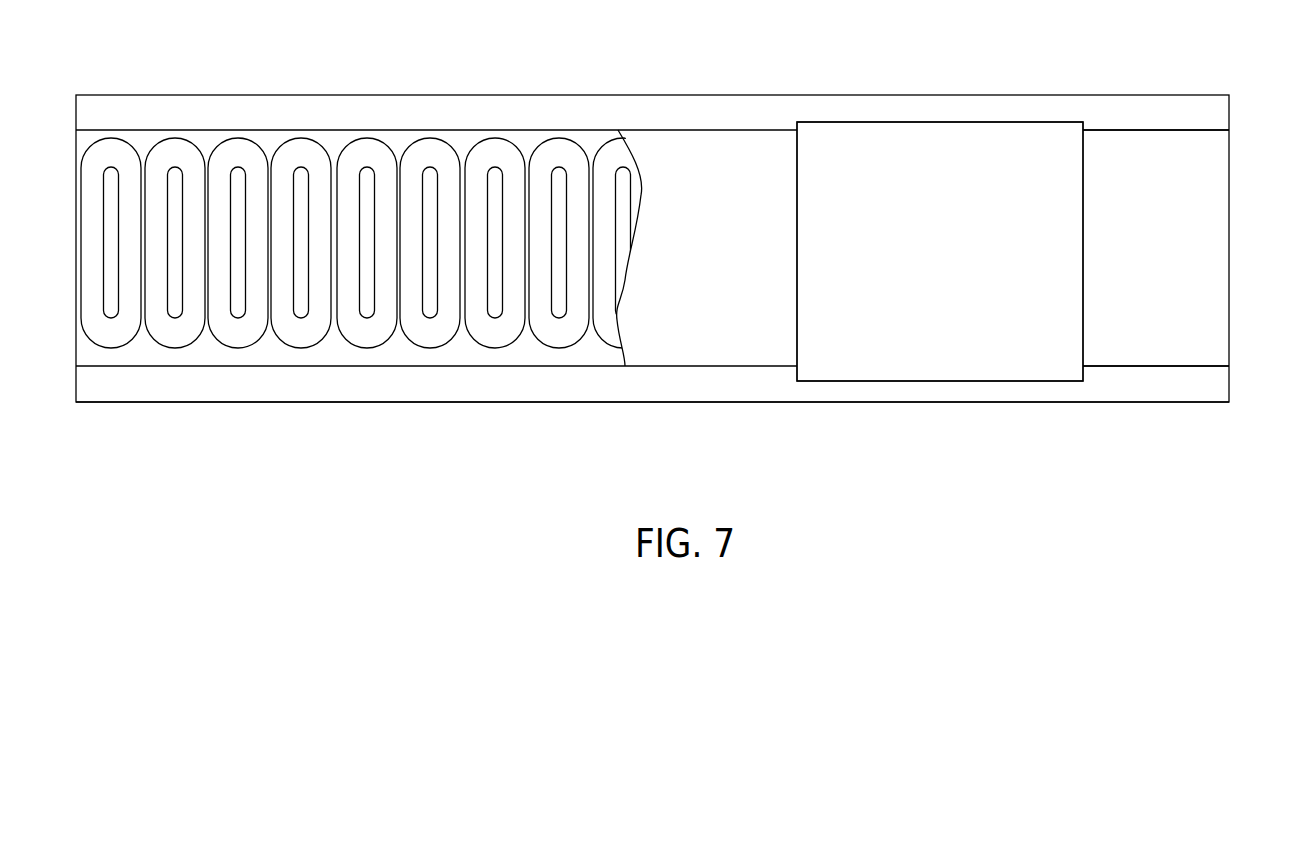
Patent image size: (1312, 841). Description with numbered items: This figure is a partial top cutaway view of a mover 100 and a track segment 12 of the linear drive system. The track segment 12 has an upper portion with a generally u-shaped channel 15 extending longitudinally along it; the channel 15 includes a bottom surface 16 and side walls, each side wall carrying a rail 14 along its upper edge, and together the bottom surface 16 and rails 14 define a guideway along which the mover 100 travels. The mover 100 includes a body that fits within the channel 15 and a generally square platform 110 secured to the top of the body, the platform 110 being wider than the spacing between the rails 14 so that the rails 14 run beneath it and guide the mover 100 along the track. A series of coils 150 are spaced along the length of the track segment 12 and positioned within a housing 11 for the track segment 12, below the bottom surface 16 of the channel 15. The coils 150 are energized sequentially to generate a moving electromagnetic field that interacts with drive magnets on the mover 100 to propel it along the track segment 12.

The housing 11 is at (1030, 418).
The track segment 12 is at (662, 115).
The rail 14 is at (577, 115).
The channel 15 is at (1202, 298).
The bottom surface 16 is at (726, 254).
The mover 100 is at (922, 175).
The platform 110 is at (976, 254).
The coils 150 is at (303, 148).